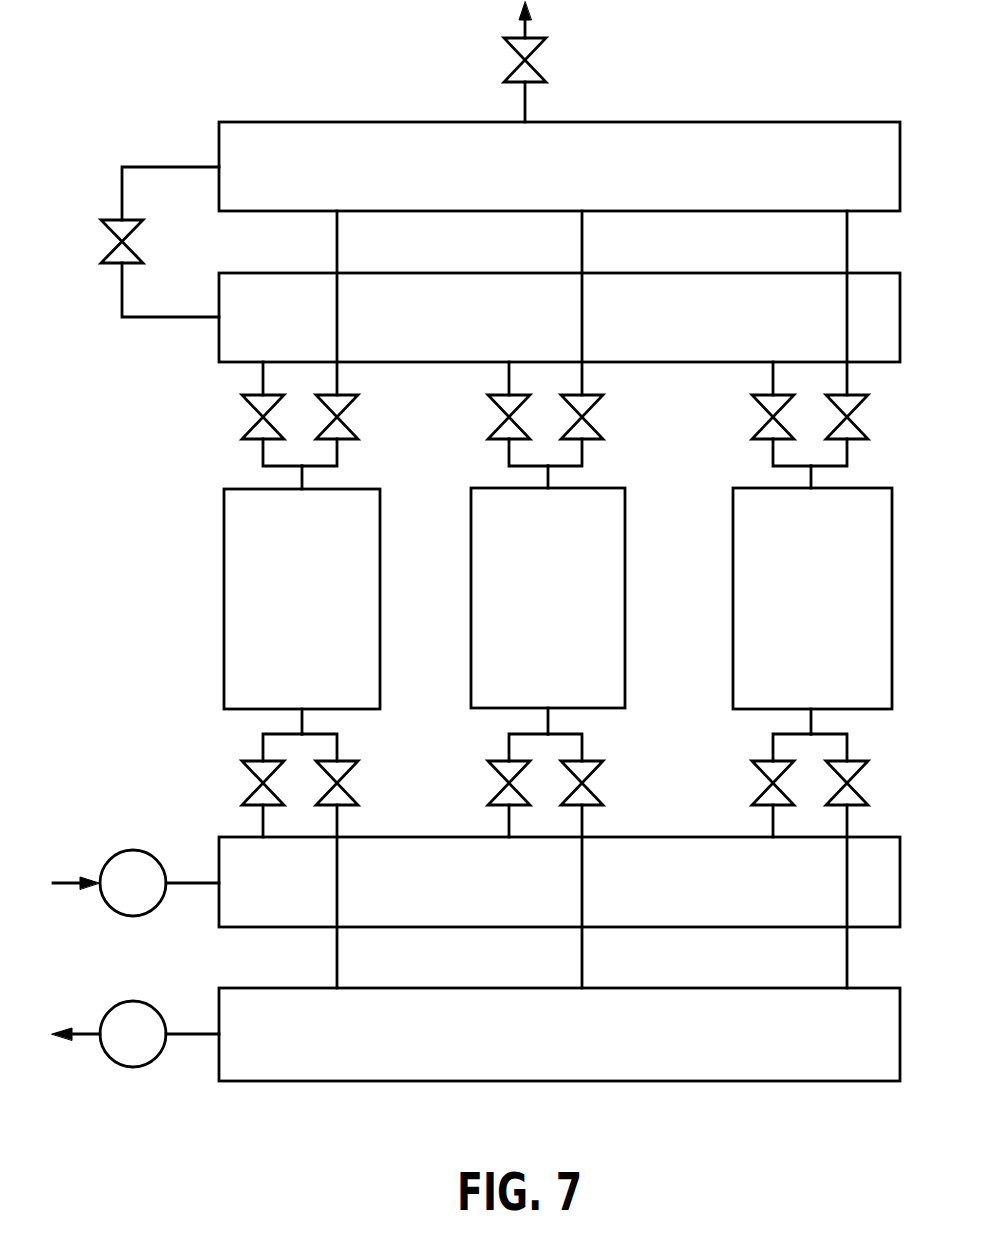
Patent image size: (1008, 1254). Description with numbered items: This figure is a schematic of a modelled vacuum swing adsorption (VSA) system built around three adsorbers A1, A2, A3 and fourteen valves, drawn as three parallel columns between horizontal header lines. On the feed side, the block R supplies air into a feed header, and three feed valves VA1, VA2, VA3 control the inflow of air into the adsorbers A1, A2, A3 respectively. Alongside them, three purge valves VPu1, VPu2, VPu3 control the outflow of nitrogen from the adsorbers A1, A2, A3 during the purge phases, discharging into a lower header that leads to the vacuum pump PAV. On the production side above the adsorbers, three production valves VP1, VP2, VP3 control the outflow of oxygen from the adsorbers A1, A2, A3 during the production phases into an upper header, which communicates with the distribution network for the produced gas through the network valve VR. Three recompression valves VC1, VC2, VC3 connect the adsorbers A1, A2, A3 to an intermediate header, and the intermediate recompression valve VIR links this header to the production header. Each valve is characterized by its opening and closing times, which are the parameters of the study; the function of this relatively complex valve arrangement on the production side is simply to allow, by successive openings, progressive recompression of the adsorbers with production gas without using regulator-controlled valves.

The network valve VR is at (544, 62).
The intermediate recompression valve VIR is at (160, 242).
The recompression valve VC1 is at (250, 414).
The production valve VP1 is at (354, 338).
The adsorber A1 is at (302, 600).
The feed valve VA1 is at (251, 785).
The purge valve VPu1 is at (359, 861).
The recompression valve VC2 is at (494, 414).
The production valve VP2 is at (598, 338).
The adsorber A2 is at (548, 600).
The feed valve VA2 is at (496, 785).
The purge valve VPu2 is at (604, 861).
The recompression valve VC3 is at (759, 414).
The production valve VP3 is at (865, 338).
The adsorber A3 is at (812, 600).
The feed valve VA3 is at (760, 785).
The purge valve VPu3 is at (871, 861).
The reactor / feed gas source R is at (136, 883).
The vacuum pump PAV is at (135, 1034).